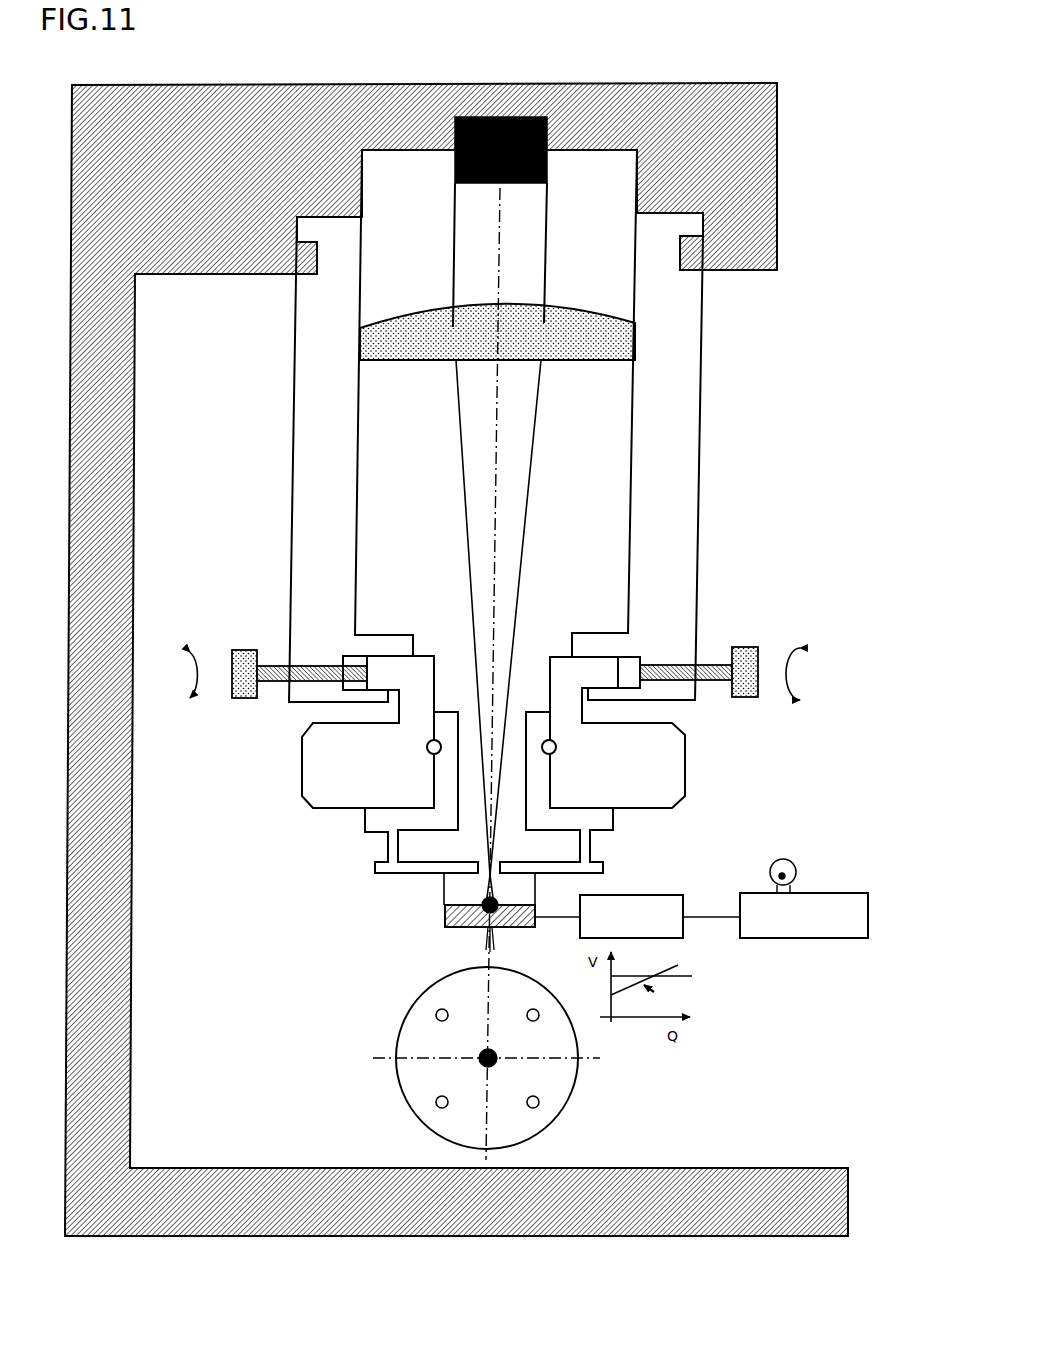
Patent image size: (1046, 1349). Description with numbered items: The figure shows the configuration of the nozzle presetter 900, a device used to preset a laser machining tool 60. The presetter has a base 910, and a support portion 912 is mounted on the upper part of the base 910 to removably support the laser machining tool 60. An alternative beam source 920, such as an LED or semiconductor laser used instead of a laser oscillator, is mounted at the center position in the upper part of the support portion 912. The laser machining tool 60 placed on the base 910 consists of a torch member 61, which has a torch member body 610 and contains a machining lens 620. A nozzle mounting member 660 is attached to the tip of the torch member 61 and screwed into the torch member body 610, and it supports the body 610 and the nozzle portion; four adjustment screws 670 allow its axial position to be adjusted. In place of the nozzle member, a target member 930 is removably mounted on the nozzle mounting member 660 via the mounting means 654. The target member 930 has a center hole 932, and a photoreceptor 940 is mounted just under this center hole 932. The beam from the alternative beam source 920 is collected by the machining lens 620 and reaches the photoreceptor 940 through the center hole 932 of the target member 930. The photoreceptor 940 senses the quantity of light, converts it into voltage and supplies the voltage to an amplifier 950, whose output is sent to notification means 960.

The nozzle presetter 900 is at (668, 70).
The base 910 is at (641, 1190).
The support portion 912 is at (703, 228).
The alternative beam source 920 is at (547, 178).
The laser machining tool 60 is at (722, 580).
The torch member 61 is at (730, 494).
The torch member body 610 is at (305, 505).
The machining lens 620 is at (633, 347).
The mounting means 654 is at (427, 748).
The nozzle mounting member 660 is at (668, 777).
The adjustment screws 670 is at (243, 650).
The target member 930 is at (370, 820).
The center hole 932 is at (488, 872).
The photoreceptor 940 is at (455, 928).
The amplifier 950 is at (640, 895).
The notification means 960 is at (816, 893).